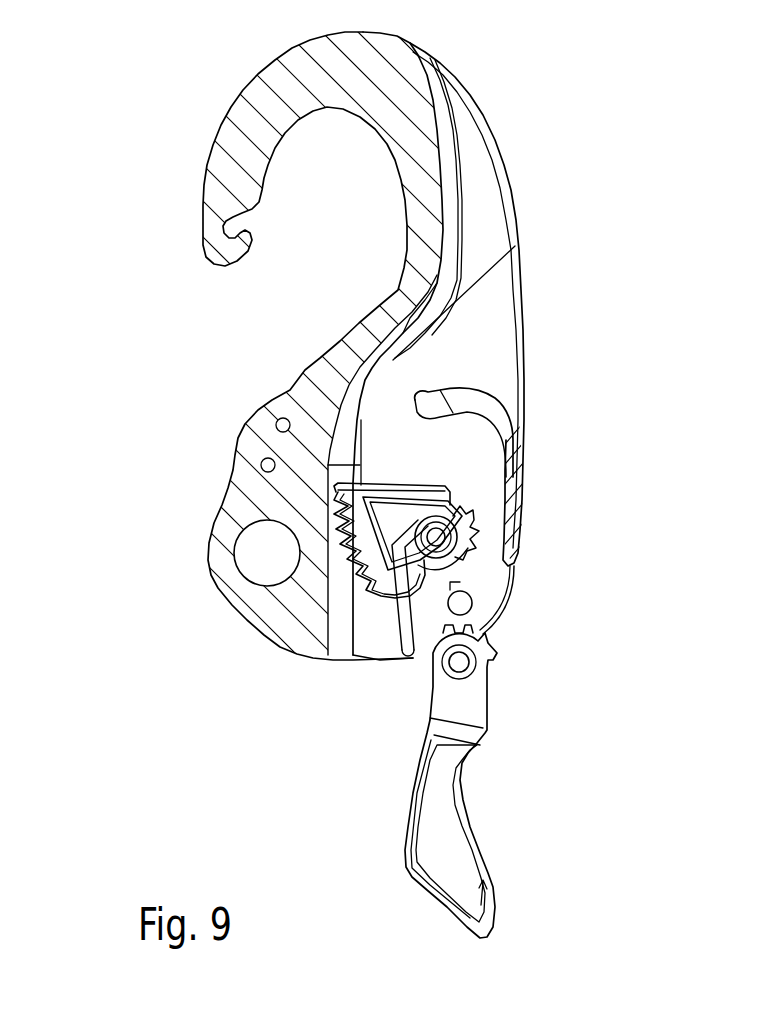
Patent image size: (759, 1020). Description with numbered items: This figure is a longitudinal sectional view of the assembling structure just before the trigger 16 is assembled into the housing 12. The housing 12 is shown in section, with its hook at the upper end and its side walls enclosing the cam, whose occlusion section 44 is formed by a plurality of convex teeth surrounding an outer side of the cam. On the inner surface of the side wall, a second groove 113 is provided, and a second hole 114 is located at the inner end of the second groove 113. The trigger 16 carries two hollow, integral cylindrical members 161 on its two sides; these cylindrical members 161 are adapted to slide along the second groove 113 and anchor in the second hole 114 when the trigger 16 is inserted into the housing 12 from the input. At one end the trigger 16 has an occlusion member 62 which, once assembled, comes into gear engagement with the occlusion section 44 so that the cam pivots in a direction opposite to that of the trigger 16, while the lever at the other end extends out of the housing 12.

The housing 12 is at (215, 404).
The occlusion section 44 is at (477, 520).
The second hole 114 is at (461, 603).
The second groove 113 is at (475, 632).
The occlusion member 62 is at (485, 633).
The trigger 16 is at (490, 697).
The cylindrical members 161 is at (450, 662).